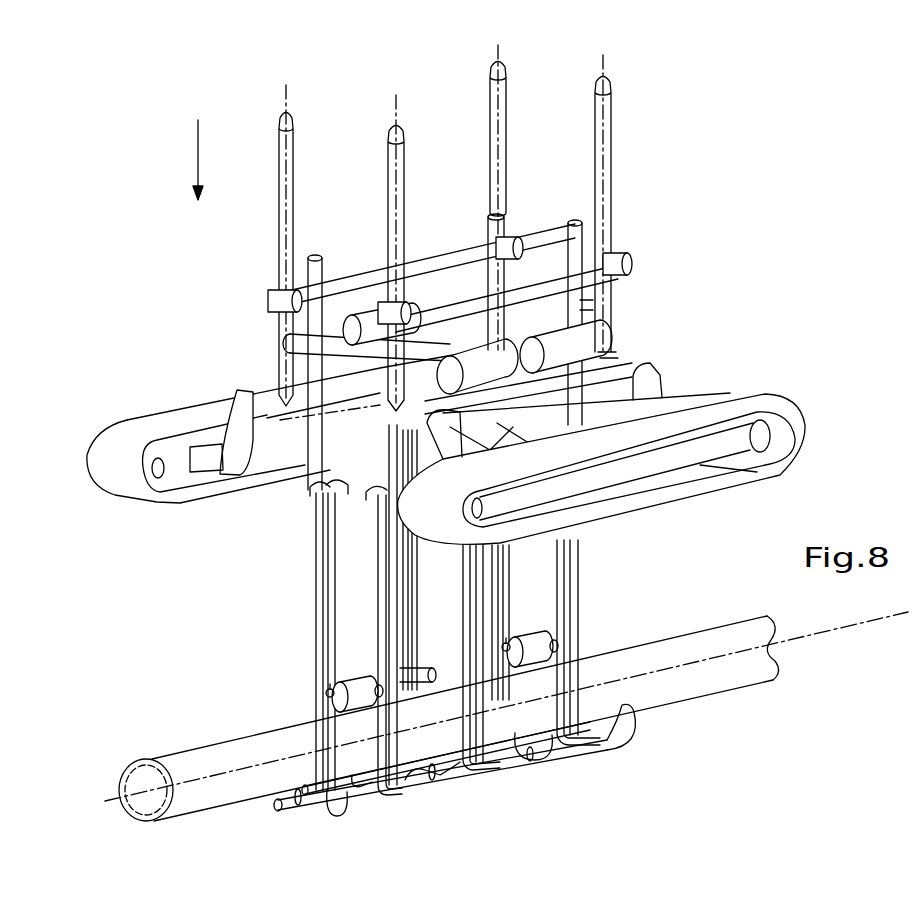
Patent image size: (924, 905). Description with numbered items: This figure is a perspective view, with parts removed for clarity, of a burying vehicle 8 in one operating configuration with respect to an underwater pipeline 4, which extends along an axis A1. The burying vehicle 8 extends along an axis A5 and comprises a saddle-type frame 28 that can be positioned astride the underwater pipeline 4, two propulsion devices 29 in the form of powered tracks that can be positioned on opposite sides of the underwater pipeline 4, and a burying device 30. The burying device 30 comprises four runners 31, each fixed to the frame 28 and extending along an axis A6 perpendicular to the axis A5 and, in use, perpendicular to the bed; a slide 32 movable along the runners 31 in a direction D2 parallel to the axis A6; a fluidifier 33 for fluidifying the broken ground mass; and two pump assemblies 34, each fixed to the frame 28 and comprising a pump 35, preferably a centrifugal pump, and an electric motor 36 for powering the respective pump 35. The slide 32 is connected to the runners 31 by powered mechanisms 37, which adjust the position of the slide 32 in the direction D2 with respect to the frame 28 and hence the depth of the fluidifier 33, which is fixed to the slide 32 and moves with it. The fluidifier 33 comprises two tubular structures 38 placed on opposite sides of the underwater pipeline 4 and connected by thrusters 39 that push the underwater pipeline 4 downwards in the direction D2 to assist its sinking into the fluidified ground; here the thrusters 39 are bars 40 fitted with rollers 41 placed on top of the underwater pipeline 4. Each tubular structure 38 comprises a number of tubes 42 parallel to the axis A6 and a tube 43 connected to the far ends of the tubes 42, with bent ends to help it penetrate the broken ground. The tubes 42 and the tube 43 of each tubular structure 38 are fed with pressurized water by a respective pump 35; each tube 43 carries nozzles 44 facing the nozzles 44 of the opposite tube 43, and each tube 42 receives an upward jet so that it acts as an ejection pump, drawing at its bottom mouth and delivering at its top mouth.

The underwater pipeline 4 is at (670, 690).
The burying vehicle 8 is at (716, 246).
The saddle-type frame 28 is at (253, 387).
The propulsion devices 29 is at (180, 407).
The burying device 30 is at (248, 561).
The runners 31 is at (294, 178).
The slide 32 is at (603, 297).
The fluidifier 33 is at (620, 578).
The pump assemblies 34 is at (272, 324).
The pump 35 is at (470, 373).
The electric motor 36 is at (410, 313).
The powered mechanisms 37 is at (278, 298).
The tubular structures 38 is at (300, 658).
The thrusters 39 is at (354, 672).
The bars 40 is at (327, 696).
The rollers 41 is at (350, 702).
The tubes 42 is at (326, 577).
The tube 43 is at (295, 808).
The nozzles 44 is at (322, 805).
The axis A1 is at (115, 800).
The axis A5 is at (280, 427).
The axis A6 is at (291, 105).
The direction D2 is at (196, 152).